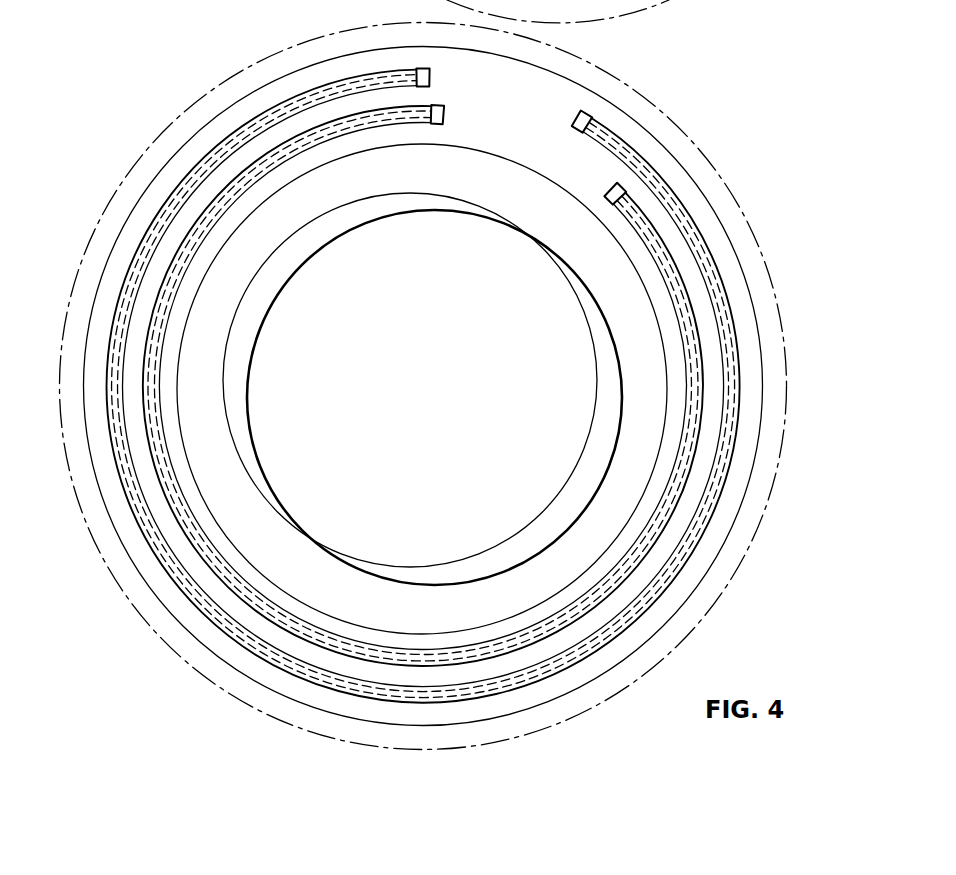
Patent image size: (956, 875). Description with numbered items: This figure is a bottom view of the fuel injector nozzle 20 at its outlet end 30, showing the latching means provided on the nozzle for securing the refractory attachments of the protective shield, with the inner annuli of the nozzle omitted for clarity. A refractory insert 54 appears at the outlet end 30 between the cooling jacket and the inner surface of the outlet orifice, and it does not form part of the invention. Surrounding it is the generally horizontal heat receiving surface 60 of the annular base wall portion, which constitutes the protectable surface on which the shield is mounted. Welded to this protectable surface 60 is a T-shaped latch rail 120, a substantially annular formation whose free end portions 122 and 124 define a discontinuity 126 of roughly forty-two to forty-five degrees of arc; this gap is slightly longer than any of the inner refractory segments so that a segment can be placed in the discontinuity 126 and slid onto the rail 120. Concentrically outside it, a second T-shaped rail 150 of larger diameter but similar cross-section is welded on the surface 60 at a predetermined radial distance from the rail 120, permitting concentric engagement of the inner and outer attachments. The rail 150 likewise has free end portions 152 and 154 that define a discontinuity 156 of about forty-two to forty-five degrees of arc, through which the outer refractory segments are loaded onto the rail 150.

The fuel injector nozzle 20 is at (154, 75).
The outlet end 30 is at (697, 109).
The refractory insert 54 is at (424, 621).
The heat receiving surface 60 is at (682, 190).
The T-shaped latch rail 120 is at (713, 322).
The free end portion 122 is at (432, 128).
The free end portion 124 is at (611, 205).
The discontinuity 126 is at (591, 175).
The T-shaped rail 150 is at (718, 227).
The free end portion 152 is at (414, 71).
The free end portion 154 is at (584, 118).
The discontinuity 156 is at (559, 111).